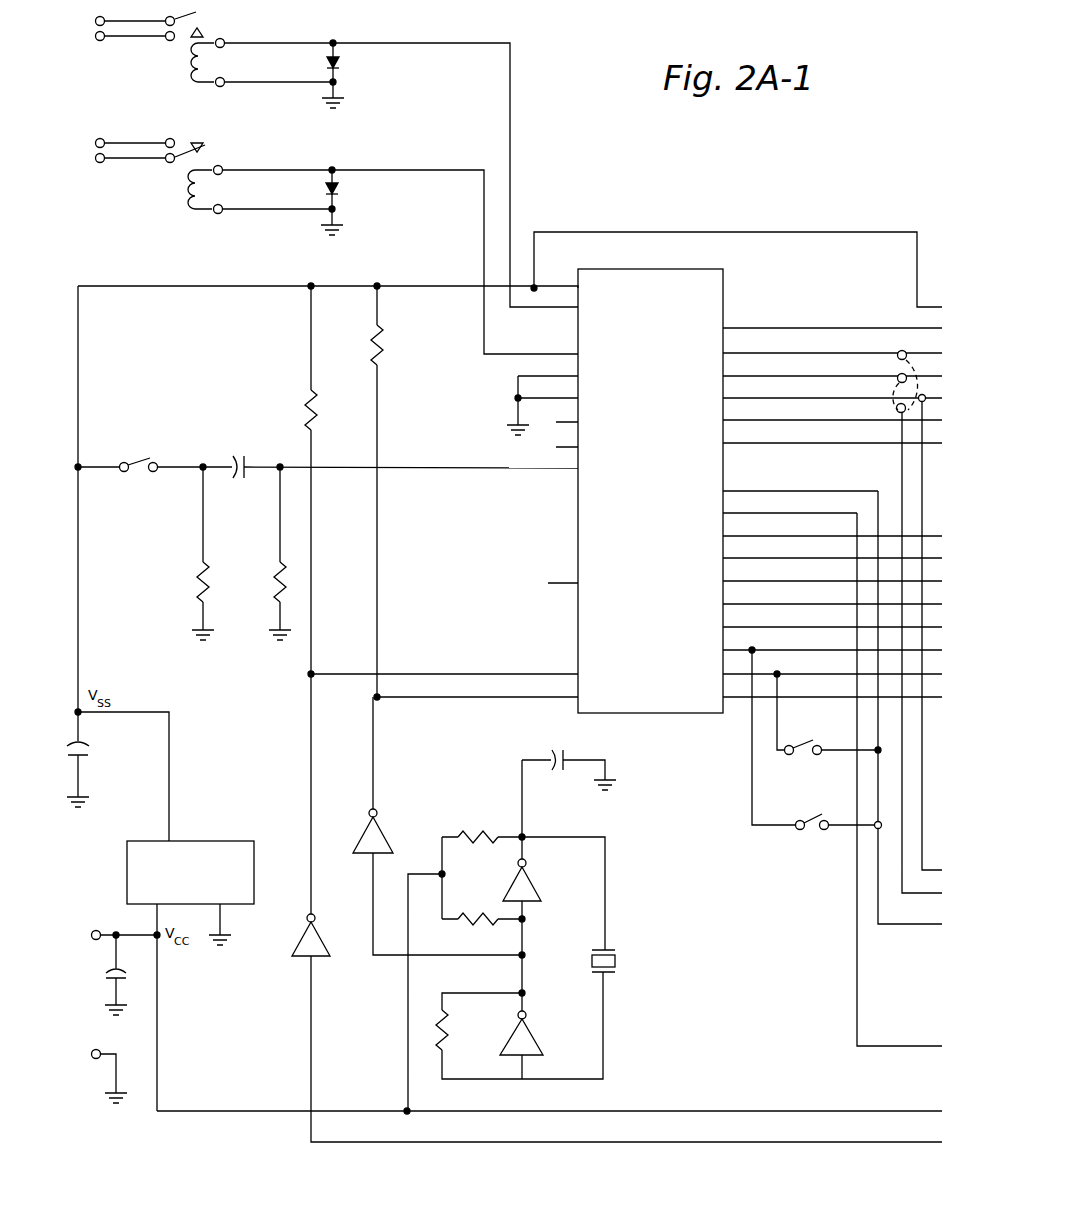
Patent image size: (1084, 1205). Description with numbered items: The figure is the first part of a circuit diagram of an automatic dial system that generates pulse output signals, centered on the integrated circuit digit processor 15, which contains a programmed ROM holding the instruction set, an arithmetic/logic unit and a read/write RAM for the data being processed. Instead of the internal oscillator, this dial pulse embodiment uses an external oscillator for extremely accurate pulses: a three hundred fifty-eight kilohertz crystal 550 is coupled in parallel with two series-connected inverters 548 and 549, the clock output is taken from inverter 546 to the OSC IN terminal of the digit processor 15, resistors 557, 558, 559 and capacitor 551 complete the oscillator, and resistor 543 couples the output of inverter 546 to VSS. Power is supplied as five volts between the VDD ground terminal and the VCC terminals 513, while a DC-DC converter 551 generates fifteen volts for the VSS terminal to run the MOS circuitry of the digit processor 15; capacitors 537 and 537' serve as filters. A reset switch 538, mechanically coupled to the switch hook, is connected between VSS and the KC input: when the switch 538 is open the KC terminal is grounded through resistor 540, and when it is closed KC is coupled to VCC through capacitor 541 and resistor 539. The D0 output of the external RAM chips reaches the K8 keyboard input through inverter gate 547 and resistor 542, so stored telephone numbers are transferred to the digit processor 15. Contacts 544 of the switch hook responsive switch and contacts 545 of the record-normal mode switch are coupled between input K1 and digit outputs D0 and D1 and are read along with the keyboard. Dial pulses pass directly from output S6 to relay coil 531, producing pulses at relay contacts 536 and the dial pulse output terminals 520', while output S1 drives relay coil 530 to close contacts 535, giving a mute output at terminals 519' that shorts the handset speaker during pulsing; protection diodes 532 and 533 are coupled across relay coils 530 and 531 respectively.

The digit processor 15 is at (630, 713).
The VCC terminals 513 is at (88, 930).
The mute output terminals 519' is at (119, 39).
The dial pulse output terminals 520' is at (119, 172).
The relay coil 530 is at (197, 82).
The relay coil 531 is at (196, 209).
The protection diode 532 is at (339, 66).
The protection diode 533 is at (338, 190).
The relay contacts 535 is at (199, 15).
The relay contacts 536 is at (200, 145).
The capacitor 537 is at (112, 774).
The capacitor 537' is at (159, 975).
The reset switch 538 is at (140, 462).
The resistor 539 is at (196, 590).
The resistor 540 is at (278, 562).
The capacitor 541 is at (242, 455).
The resistor 542 is at (313, 433).
The resistor 543 is at (381, 347).
The switch hook contacts 544 is at (808, 742).
The record-normal mode switch contacts 545 is at (805, 820).
The inverter 546 is at (378, 838).
The inverter gate 547 is at (318, 944).
The inverter 548 is at (566, 1042).
The inverter 549 is at (530, 892).
The crystal 550 is at (617, 955).
The DC-DC converter 551 is at (248, 858).
The resistor 557 is at (478, 833).
The resistor 558 is at (478, 914).
The resistor 559 is at (446, 1045).